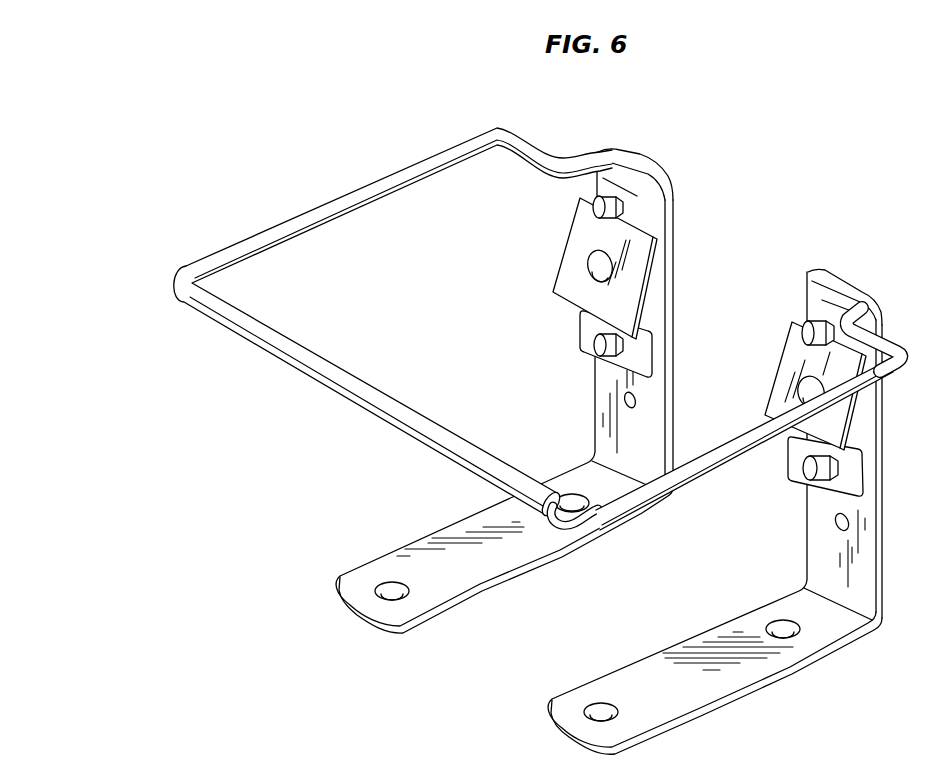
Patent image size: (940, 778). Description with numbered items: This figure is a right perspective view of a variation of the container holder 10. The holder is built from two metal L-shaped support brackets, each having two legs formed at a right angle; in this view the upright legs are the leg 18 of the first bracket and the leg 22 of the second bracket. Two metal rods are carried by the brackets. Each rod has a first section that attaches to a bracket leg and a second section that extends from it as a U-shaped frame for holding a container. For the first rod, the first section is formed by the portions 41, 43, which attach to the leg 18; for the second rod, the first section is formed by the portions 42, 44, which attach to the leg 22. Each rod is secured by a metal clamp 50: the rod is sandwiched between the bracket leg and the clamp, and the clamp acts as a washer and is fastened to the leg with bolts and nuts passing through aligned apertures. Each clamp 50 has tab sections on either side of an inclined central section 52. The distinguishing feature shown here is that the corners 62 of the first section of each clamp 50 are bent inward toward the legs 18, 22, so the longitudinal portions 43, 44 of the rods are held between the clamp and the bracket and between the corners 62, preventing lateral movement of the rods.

The container holder 10 is at (846, 206).
The first leg of the first L-shaped bracket 18 is at (658, 197).
The first leg of the second L-shaped bracket 22 is at (816, 280).
The first section portion of the first rod 41 is at (598, 158).
The first section portion of the second rod 42 is at (852, 302).
The longitudinal portion of the first section of the first rod 43 is at (658, 187).
The longitudinal portion of the first section of the second rod 44 is at (815, 281).
The clamp 50 is at (541, 266).
The inclined central section 52 is at (570, 294).
The bent corners of the clamp 62 is at (588, 190).